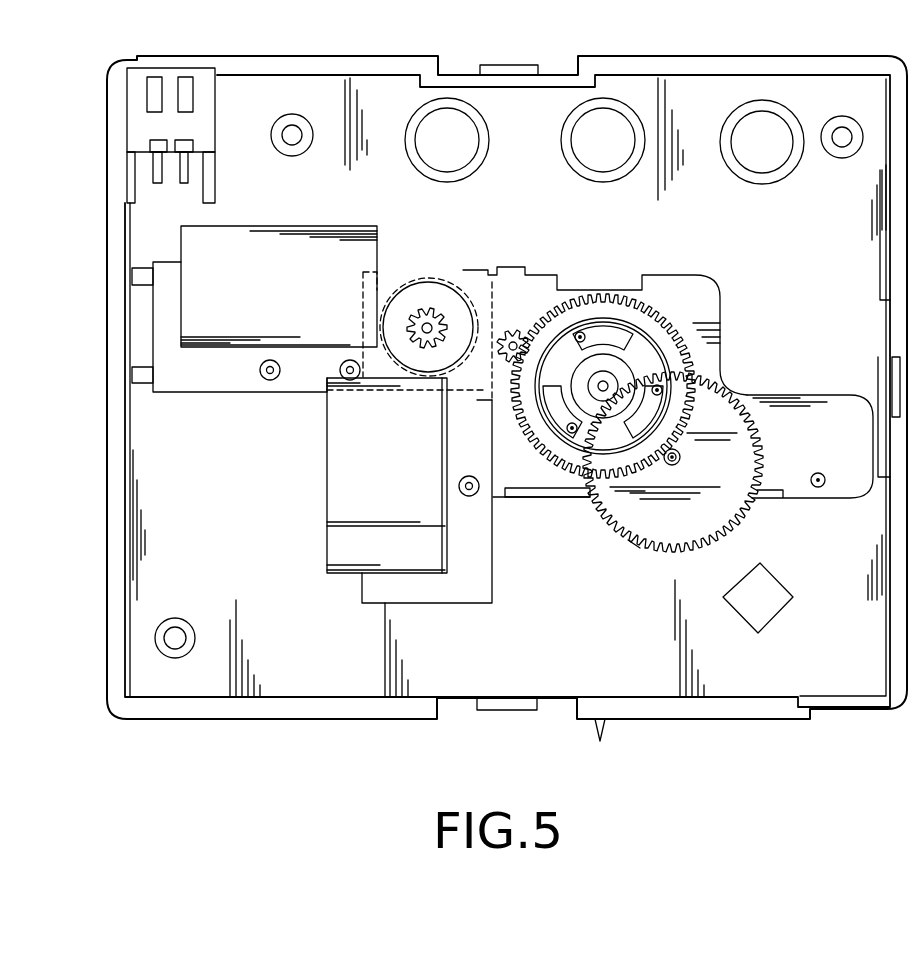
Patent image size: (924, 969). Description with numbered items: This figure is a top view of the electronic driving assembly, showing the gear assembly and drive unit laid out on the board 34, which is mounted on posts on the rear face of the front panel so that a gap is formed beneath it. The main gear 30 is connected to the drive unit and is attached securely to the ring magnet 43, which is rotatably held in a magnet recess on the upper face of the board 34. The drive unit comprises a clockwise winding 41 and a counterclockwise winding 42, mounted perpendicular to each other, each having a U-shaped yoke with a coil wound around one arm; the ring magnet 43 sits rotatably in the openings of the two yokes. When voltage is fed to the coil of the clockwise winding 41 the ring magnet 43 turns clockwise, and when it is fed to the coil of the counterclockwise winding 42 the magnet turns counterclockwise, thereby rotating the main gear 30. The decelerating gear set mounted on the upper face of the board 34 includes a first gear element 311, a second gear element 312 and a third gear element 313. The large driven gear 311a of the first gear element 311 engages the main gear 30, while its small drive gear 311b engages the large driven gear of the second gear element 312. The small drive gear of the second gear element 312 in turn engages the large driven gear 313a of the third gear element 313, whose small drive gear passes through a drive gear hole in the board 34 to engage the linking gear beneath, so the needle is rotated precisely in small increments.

The main gear 30 is at (423, 308).
The board 34 is at (797, 495).
The clockwise winding 41 is at (290, 238).
The counterclockwise winding 42 is at (340, 505).
The ring magnet 43 is at (413, 283).
The first gear element 311 is at (560, 276).
The large driven gear 311a is at (477, 400).
The small drive gear 311b is at (520, 335).
The second gear element 312 is at (681, 324).
The third gear element 313 is at (737, 376).
The large driven gear 313a is at (633, 537).